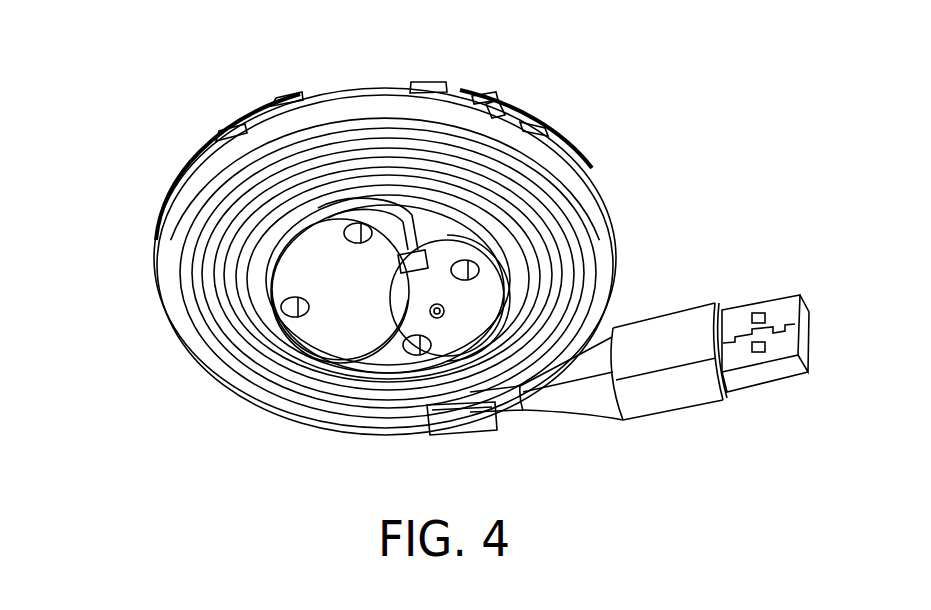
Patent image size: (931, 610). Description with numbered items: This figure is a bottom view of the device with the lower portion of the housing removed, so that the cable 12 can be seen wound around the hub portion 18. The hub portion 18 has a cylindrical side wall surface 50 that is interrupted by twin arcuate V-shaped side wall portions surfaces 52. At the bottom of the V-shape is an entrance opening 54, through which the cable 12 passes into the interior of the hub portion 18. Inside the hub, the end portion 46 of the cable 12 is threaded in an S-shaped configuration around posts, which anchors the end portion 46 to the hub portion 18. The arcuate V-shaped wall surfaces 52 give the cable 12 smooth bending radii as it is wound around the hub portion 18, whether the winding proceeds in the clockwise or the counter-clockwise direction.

The cable 12 is at (208, 362).
The hub portion 18 is at (322, 340).
The end portion 46 is at (422, 233).
The cylindrical side wall surface 50 is at (257, 270).
The arcuate V-shaped side wall portions surfaces 52 is at (416, 213).
The entrance opening 54 is at (407, 262).